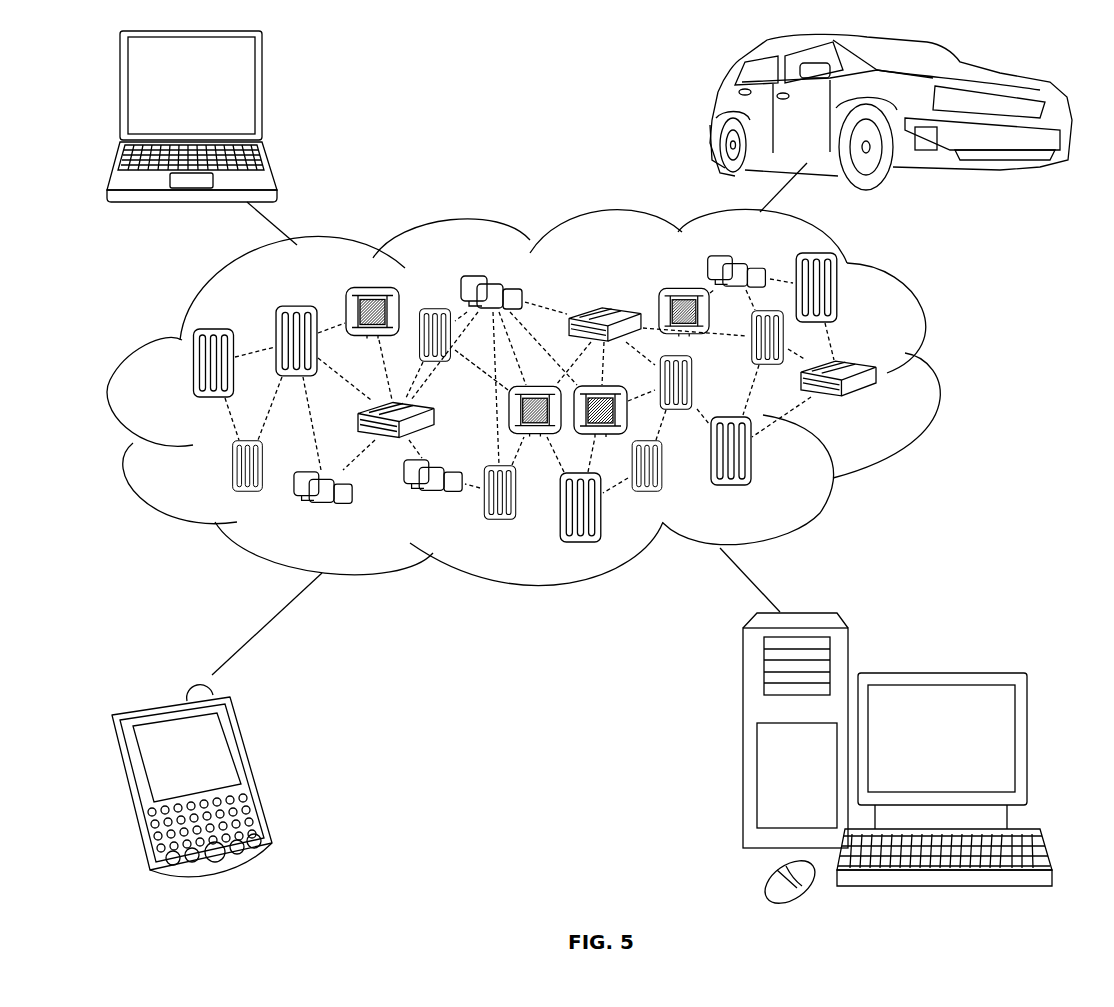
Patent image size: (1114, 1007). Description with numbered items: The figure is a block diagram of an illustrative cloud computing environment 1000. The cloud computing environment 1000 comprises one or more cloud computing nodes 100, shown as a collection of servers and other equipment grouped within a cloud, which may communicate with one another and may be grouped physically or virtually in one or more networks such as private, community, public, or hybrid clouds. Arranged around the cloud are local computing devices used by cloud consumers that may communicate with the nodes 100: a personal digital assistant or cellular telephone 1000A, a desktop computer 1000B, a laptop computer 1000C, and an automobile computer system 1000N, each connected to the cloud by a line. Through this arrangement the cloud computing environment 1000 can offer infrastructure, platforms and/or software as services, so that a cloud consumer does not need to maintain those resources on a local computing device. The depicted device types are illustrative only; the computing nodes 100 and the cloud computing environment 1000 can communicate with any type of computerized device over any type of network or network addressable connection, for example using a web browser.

The cloud computing nodes 100 is at (885, 409).
The cloud computing environment 1000 is at (938, 378).
The personal digital assistant (PDA) or cellular telephone 1000A is at (253, 770).
The desktop computer 1000B is at (950, 652).
The laptop computer 1000C is at (262, 96).
The automobile computer system 1000N is at (712, 110).